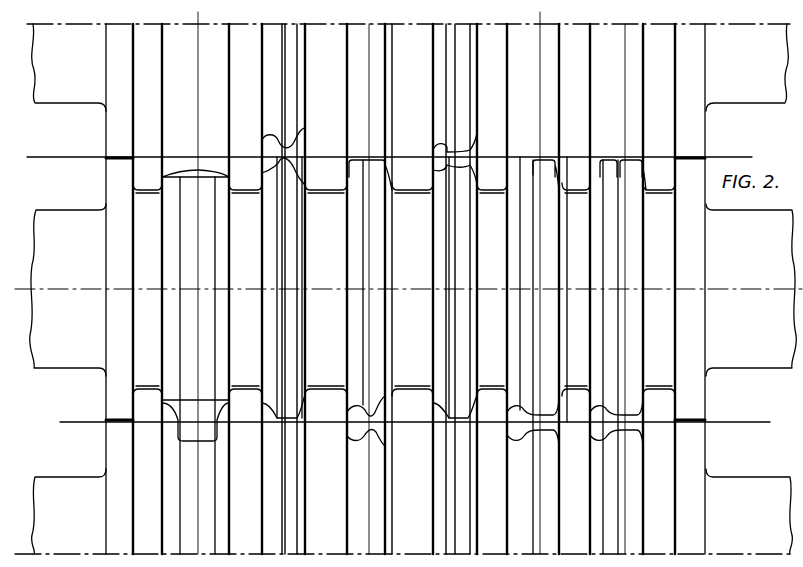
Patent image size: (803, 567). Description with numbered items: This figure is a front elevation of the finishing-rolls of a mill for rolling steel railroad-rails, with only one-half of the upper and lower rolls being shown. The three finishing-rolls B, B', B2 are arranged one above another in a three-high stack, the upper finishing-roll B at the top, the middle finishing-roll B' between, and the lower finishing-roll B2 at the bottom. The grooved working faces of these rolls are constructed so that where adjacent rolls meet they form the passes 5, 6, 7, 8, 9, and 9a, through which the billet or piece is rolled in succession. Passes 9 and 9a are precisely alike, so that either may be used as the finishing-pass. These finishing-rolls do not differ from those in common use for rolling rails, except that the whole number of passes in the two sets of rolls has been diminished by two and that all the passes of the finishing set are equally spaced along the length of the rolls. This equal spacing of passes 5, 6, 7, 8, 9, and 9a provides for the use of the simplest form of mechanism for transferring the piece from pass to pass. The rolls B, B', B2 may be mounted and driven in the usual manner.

The finishing-roll B is at (411, 283).
The finishing-roll B' is at (404, 355).
The finishing-roll B2 is at (265, 453).
The pass 5 is at (195, 422).
The pass 6 is at (283, 156).
The pass 7 is at (366, 421).
The pass 8 is at (455, 159).
The pass 9 is at (533, 422).
The pass 9a is at (616, 422).